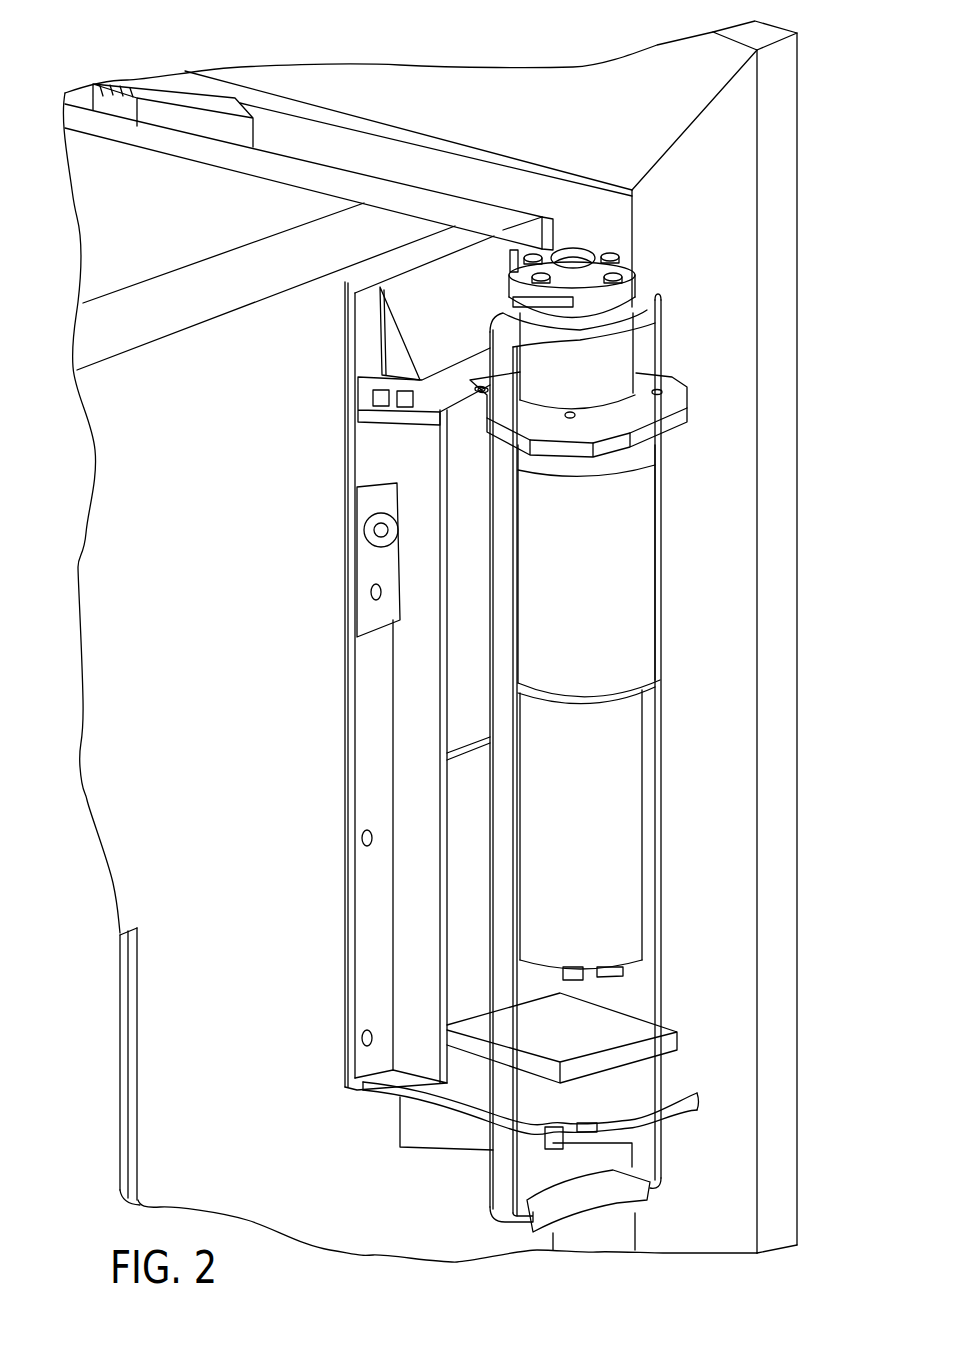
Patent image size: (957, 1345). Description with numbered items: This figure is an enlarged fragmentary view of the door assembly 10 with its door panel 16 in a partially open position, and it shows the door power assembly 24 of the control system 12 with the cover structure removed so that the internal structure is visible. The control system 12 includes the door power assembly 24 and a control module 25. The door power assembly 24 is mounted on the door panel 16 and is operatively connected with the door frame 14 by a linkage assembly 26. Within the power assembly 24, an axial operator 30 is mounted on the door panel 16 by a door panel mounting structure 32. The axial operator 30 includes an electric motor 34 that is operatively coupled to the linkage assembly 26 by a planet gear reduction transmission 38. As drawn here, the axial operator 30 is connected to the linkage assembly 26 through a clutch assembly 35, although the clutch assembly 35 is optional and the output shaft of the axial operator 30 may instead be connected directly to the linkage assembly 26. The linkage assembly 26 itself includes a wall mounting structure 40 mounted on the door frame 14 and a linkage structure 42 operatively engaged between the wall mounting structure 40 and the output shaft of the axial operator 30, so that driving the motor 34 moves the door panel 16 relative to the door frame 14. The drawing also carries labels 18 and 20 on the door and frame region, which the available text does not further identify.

The door assembly 10 is at (140, 275).
The control system 12 is at (287, 598).
The door frame 14 is at (738, 902).
The door panel 16 is at (140, 433).
The door opening direction 18 is at (117, 184).
The frame jamb 20 is at (847, 161).
The door power assembly 24 is at (718, 541).
The control module 25 is at (463, 900).
The linkage assembly 26 is at (200, 190).
The axial operator 30 is at (718, 722).
The door panel mounting structure 32 is at (438, 405).
The electric motor 34 is at (597, 835).
The clutch assembly 35 is at (651, 271).
The planet gear reduction transmission 38 is at (612, 607).
The wall mounting structure 40 is at (178, 96).
The linkage structure 42 is at (293, 182).